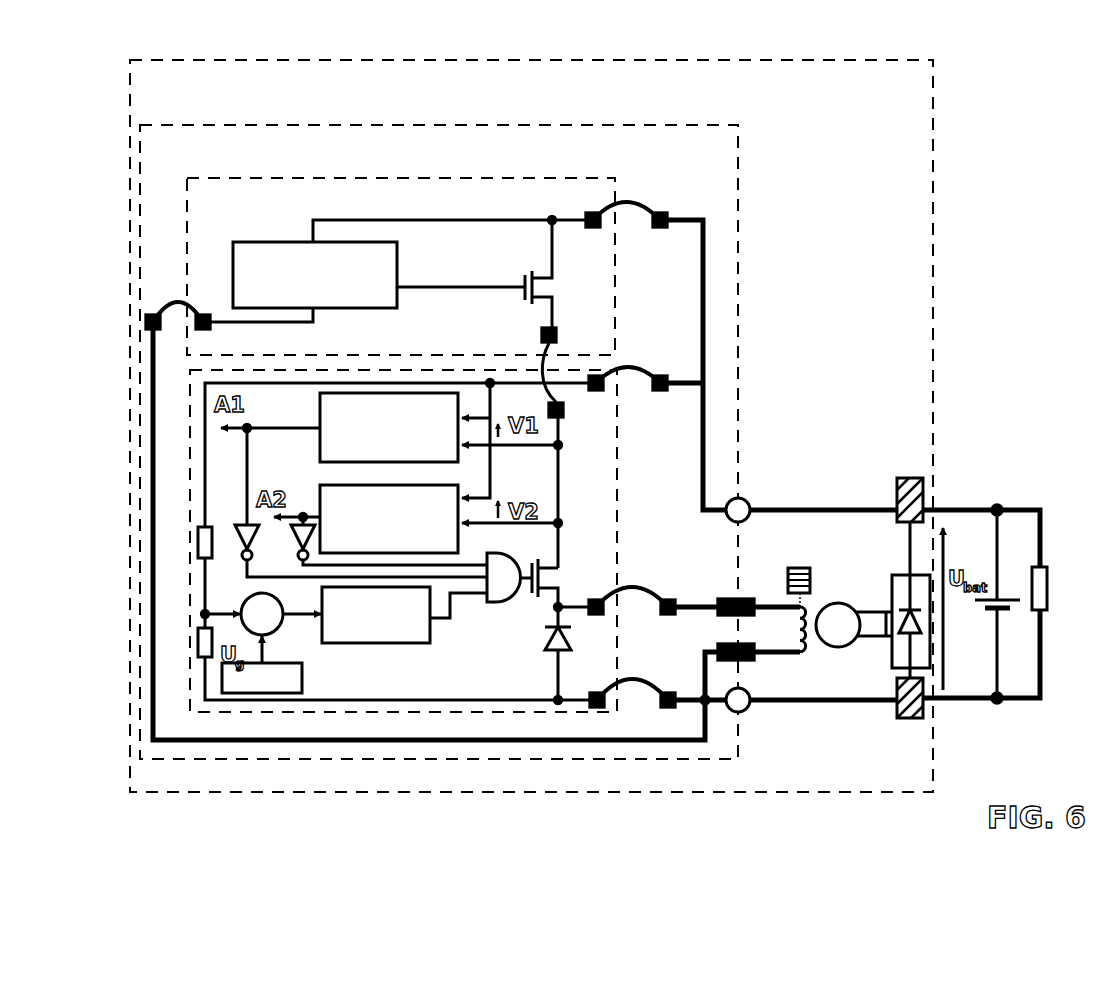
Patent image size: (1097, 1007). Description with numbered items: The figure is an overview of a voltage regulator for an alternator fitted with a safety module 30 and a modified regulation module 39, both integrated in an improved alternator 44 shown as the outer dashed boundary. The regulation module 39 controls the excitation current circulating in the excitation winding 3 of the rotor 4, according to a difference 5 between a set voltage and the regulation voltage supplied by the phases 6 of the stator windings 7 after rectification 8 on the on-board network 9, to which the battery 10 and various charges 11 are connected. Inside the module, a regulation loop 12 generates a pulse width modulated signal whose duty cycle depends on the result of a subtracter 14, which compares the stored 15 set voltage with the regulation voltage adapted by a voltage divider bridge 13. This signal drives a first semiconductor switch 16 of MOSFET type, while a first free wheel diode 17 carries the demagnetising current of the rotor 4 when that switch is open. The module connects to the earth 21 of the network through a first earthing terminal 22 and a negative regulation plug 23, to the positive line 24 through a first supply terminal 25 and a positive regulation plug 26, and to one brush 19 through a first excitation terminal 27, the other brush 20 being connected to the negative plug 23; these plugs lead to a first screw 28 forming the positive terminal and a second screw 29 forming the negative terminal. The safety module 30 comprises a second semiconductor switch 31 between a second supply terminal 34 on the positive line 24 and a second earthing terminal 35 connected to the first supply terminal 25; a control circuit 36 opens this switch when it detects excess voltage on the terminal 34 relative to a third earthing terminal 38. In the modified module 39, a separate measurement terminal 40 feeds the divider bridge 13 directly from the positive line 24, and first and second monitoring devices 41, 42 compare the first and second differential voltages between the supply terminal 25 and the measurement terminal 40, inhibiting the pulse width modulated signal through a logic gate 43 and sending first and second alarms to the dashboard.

The excitation winding 3 is at (805, 655).
The rotor 4 is at (794, 567).
The difference 5 is at (282, 628).
The phases 6 is at (888, 640).
The stator windings 7 is at (833, 608).
The rectification 8 is at (893, 584).
The on-board network 9 is at (1006, 506).
The battery 10 is at (1000, 610).
The charges 11 is at (1050, 590).
The regulation loop 12 is at (428, 645).
The voltage divider bridge 13 is at (214, 550).
The subtracter 14 is at (263, 611).
The stored set voltage 15 is at (304, 678).
The first semiconductor switch 16 is at (538, 564).
The first free wheel diode 17 is at (550, 650).
The brush 19 is at (742, 600).
The brush 20 is at (760, 663).
The earth 21 is at (960, 703).
The first earthing terminal 22 is at (593, 694).
The negative regulation plug 23 is at (748, 711).
The positive line 24 is at (960, 508).
The first supply terminal 25 is at (562, 420).
The positive regulation plug 26 is at (748, 502).
The first excitation terminal 27 is at (594, 602).
The first screw 28 is at (895, 490).
The second screw 29 is at (895, 710).
The safety module 30 is at (620, 296).
The second semiconductor switch 31 is at (528, 278).
The second supply terminal 34 is at (592, 214).
The second earthing terminal 35 is at (575, 325).
The control circuit 36 is at (332, 310).
The third earthing terminal 38 is at (208, 330).
The modified regulation module 39 is at (621, 497).
The measurement terminal 40 is at (600, 392).
The first monitoring device 41 is at (318, 426).
The second monitoring device 42 is at (318, 502).
The logic gate 43 is at (744, 183).
The improved alternator 44 is at (940, 182).